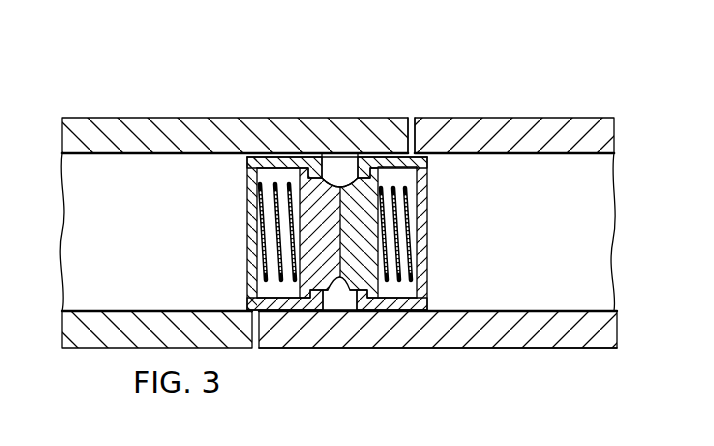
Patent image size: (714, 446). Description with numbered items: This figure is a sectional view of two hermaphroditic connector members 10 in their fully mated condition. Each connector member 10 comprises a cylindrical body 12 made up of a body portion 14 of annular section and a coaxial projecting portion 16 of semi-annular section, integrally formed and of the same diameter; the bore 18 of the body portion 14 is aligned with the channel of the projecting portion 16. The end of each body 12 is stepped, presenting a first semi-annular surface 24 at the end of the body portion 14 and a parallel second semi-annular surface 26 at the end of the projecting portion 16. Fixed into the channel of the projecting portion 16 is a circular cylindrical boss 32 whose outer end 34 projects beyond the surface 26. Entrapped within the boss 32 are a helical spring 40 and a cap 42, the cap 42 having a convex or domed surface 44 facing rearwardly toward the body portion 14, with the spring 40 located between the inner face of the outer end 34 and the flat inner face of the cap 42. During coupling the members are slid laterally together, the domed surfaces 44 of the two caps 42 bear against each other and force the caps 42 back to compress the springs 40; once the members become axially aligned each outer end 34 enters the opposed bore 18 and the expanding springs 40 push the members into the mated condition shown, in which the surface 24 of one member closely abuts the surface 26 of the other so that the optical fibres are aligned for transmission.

The hermaphroditic connector member 10 is at (338, 104).
The cylindrical body 12 is at (339, 360).
The body portion 14 is at (595, 350).
The projecting portion 16 is at (388, 349).
The bore 18 is at (600, 183).
The first semi-annular surface 24 is at (418, 131).
The second semi-annular surface 26 is at (407, 133).
The boss 32 is at (299, 233).
The outer end of the boss 34 is at (243, 225).
The helical spring 40 is at (410, 223).
The cap 42 is at (339, 232).
The domed surface 44 is at (344, 180).